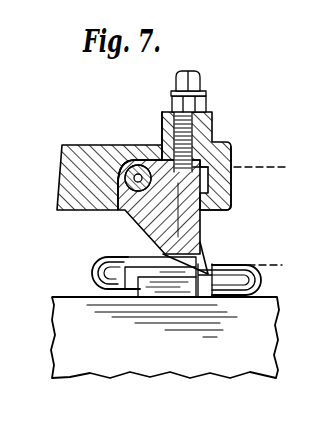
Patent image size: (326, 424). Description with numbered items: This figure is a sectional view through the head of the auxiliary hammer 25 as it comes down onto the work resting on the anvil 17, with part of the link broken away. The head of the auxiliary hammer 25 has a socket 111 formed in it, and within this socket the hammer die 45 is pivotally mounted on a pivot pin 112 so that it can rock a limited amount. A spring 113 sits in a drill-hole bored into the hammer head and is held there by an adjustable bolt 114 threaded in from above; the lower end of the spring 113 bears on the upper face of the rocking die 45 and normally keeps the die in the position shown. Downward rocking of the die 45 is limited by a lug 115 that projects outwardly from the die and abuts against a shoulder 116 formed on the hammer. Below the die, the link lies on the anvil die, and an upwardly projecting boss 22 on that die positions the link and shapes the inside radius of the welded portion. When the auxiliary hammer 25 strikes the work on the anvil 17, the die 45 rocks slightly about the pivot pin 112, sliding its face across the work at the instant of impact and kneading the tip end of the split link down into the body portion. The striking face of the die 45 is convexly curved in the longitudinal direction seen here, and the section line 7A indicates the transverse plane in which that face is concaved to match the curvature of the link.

The section line 7A— 7A is at (267, 216).
The anvil 17 is at (72, 347).
The boss 22 is at (132, 290).
The auxiliary hammer 25 is at (84, 148).
The hammer die 45 is at (200, 238).
The socket 111 is at (163, 144).
The pivot pin 112 is at (127, 155).
The spring 113 is at (195, 155).
The adjustable bolt 114 is at (200, 77).
The lug 115 is at (232, 174).
The shoulder 116 is at (230, 207).